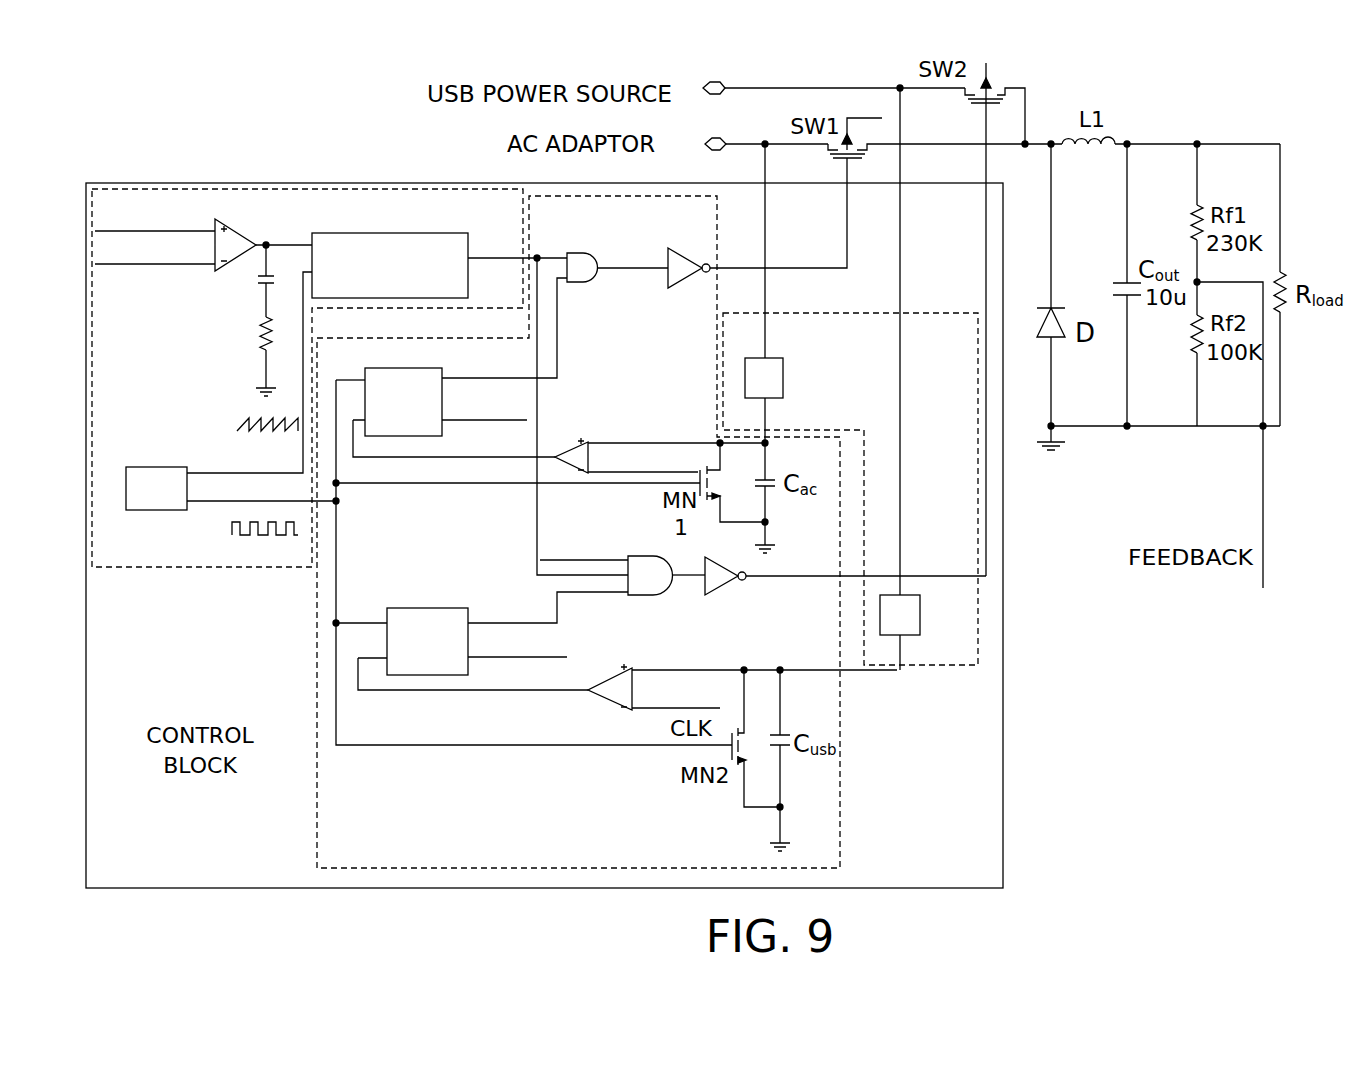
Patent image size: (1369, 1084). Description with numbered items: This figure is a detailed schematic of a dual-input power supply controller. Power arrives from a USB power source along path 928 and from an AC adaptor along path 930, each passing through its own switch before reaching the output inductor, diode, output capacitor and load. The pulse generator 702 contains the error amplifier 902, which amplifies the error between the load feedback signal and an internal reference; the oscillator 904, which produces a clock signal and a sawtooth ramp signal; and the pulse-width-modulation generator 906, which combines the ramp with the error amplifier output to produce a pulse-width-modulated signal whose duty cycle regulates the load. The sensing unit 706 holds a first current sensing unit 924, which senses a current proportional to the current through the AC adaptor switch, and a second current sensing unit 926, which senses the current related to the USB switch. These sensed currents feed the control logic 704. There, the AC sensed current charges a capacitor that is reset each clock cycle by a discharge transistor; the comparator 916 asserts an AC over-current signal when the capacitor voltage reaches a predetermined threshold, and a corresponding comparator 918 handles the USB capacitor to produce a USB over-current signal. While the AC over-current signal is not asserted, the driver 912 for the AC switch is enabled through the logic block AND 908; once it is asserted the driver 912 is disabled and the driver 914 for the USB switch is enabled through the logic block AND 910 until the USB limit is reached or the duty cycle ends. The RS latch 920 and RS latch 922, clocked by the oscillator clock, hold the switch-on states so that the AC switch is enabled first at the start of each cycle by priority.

The pulse generator 702 is at (190, 567).
The control logic 704 is at (317, 803).
The sensing unit 706 is at (858, 308).
The error amplifier 902 is at (223, 265).
The oscillator 904 is at (165, 512).
The PWM generator 906 is at (395, 232).
The logic block AND 908 is at (583, 250).
The logic block AND 910 is at (628, 595).
The driver 912 is at (677, 285).
The driver 914 is at (718, 592).
The comparator 916 is at (588, 442).
The comparator 918 is at (633, 668).
The RS latch 920 is at (403, 436).
The RS latch 922 is at (445, 605).
The first current sensing unit 924 is at (785, 370).
The second current sensing unit 926 is at (922, 598).
The path 928 is at (819, 87).
The path 930 is at (752, 140).